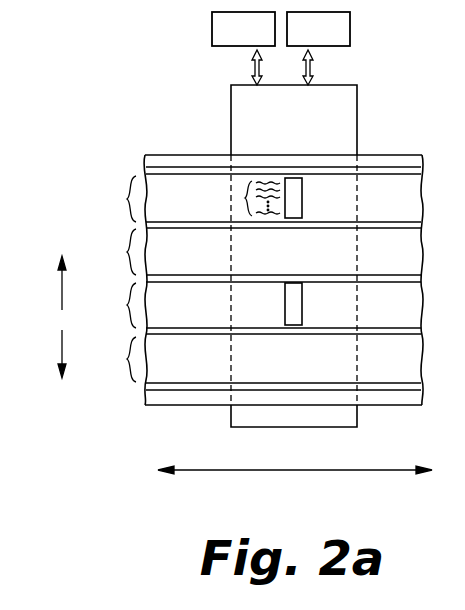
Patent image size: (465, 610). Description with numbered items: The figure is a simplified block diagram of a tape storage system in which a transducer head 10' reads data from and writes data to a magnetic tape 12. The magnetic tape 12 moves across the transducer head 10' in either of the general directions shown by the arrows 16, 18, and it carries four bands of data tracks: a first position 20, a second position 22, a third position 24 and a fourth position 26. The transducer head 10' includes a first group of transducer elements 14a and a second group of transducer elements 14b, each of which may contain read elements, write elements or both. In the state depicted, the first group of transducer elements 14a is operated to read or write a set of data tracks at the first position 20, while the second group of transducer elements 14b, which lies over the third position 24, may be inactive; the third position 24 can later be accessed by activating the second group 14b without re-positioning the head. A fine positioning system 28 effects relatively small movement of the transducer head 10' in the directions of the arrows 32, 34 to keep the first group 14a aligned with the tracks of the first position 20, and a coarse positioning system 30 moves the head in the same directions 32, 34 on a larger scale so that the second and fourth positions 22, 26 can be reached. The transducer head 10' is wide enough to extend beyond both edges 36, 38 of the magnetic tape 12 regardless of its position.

The transducer head 10' is at (318, 235).
The magnetic tape 12 is at (170, 162).
The first group of transducer elements 14a is at (303, 202).
The second group of transducer elements 14b is at (303, 307).
The direction arrow 16 is at (385, 471).
The direction arrow 18 is at (210, 471).
The first position 20 is at (183, 199).
The second position 22 is at (111, 252).
The third position 24 is at (111, 305).
The fourth position 26 is at (111, 359).
The fine positioning system 28 is at (350, 31).
The coarse positioning system 30 is at (212, 30).
The direction arrow 32 is at (62, 290).
The direction arrow 34 is at (62, 346).
The edge of magnetic tape 36 is at (394, 154).
The edge of magnetic tape 38 is at (380, 406).